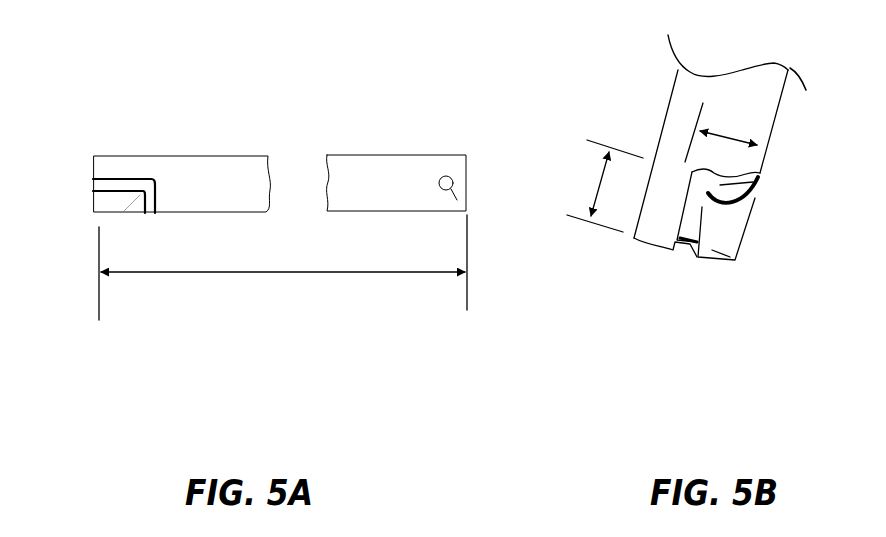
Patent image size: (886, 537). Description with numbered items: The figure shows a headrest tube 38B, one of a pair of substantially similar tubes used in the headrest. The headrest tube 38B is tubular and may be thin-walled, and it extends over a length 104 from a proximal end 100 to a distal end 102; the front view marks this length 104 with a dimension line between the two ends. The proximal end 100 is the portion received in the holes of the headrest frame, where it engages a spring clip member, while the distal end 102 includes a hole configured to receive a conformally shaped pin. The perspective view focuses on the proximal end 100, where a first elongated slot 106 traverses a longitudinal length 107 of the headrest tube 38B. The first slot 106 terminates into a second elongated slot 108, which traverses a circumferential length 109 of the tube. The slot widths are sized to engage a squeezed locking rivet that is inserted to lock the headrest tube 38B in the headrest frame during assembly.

In FIG. 5A, the headrest tube 38B is at (201, 155).
In FIG. 5A, the proximal end 100 is at (97, 195).
In FIG. 5B, the proximal end 100 is at (737, 260).
In FIG. 5A, the distal end 102 is at (467, 212).
In FIG. 5A, the length 104 is at (267, 272).
In FIG. 5B, the first elongated slot 106 is at (688, 215).
In FIG. 5B, the longitudinal length 107 is at (602, 186).
In FIG. 5B, the second elongated slot 108 is at (755, 198).
In FIG. 5B, the circumferential length 109 is at (721, 132).